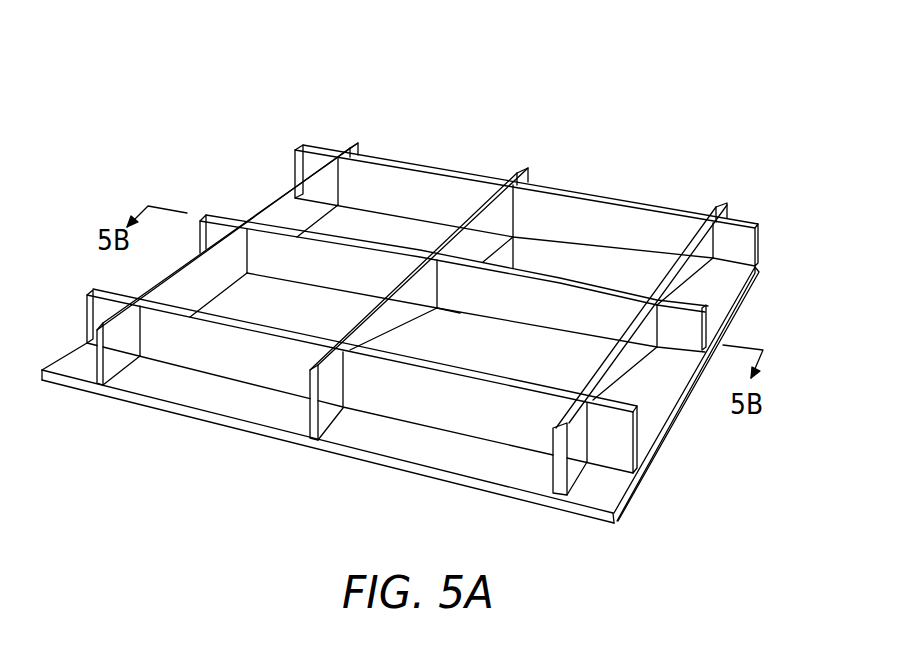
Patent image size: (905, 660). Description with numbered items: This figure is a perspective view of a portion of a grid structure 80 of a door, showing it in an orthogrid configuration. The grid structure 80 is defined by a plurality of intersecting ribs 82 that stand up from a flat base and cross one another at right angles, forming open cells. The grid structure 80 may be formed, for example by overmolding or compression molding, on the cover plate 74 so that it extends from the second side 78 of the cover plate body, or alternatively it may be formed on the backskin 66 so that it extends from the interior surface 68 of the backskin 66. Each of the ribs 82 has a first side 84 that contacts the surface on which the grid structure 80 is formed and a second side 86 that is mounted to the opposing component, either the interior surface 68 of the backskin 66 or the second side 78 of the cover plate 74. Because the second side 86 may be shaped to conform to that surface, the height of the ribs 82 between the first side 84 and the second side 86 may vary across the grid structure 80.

The backskin 66 is at (449, 301).
The cover plate 74 is at (683, 113).
The interior surface 68 is at (449, 402).
The second side 78 is at (715, 285).
The grid structure 80 is at (594, 479).
The ribs 82 is at (478, 290).
The first side 84 is at (472, 318).
The second side 86 is at (513, 268).